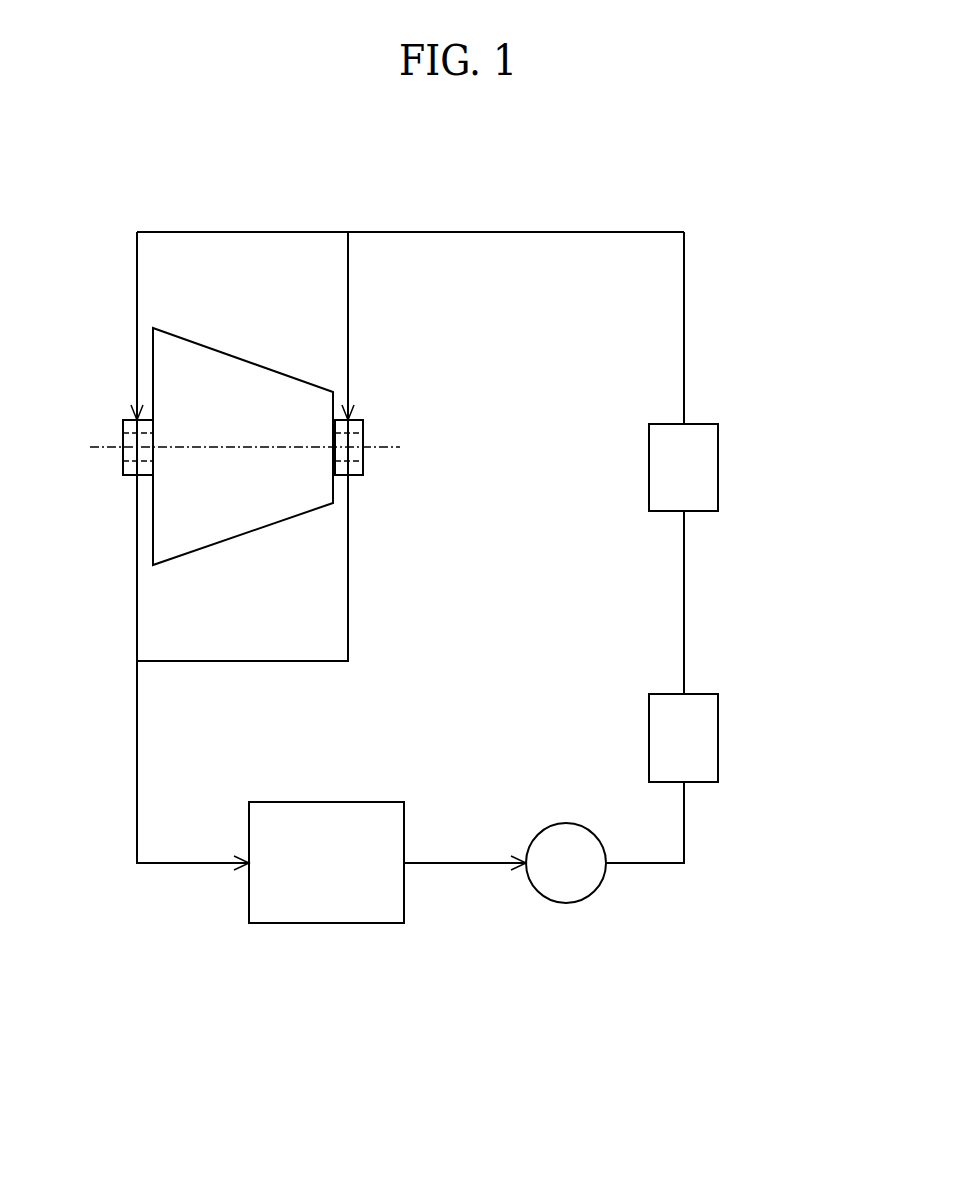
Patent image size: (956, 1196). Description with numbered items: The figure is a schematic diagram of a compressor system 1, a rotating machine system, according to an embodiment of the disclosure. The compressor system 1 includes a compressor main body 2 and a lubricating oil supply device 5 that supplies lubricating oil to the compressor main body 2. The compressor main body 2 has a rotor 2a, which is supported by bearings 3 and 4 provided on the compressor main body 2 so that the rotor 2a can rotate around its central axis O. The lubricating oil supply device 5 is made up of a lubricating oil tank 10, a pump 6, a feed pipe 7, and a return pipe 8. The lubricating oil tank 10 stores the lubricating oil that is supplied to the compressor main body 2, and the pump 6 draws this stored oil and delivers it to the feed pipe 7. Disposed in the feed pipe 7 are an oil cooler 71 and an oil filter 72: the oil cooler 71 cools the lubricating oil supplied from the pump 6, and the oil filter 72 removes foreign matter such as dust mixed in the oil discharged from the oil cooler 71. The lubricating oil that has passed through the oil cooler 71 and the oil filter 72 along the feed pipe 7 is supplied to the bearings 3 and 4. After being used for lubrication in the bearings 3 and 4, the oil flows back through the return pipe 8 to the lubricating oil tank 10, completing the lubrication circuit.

The compressor system 1 is at (697, 252).
The compressor main body 2 is at (279, 373).
The rotor 2a is at (360, 477).
The bearing 3 is at (357, 419).
The bearing 4 is at (124, 418).
The lubricating oil supply device 5 is at (423, 898).
The pump 6 is at (566, 904).
The feed pipe 7 is at (684, 631).
The oil cooler 71 is at (718, 732).
The oil filter 72 is at (718, 467).
The return pipe 8 is at (137, 770).
The lubricating oil tank 10 is at (342, 923).
The central axis O is at (386, 446).